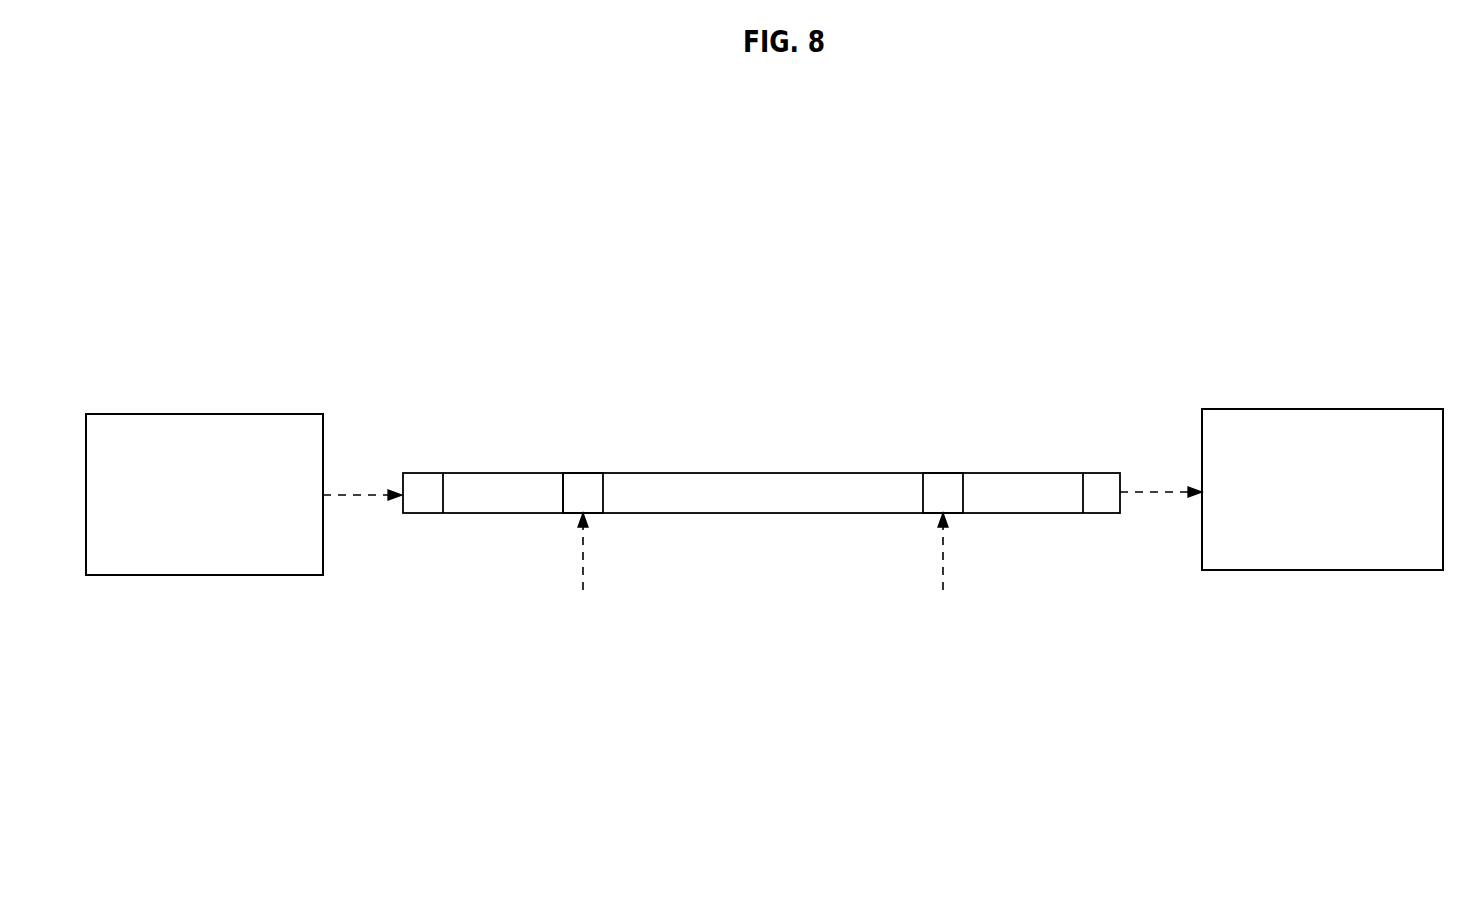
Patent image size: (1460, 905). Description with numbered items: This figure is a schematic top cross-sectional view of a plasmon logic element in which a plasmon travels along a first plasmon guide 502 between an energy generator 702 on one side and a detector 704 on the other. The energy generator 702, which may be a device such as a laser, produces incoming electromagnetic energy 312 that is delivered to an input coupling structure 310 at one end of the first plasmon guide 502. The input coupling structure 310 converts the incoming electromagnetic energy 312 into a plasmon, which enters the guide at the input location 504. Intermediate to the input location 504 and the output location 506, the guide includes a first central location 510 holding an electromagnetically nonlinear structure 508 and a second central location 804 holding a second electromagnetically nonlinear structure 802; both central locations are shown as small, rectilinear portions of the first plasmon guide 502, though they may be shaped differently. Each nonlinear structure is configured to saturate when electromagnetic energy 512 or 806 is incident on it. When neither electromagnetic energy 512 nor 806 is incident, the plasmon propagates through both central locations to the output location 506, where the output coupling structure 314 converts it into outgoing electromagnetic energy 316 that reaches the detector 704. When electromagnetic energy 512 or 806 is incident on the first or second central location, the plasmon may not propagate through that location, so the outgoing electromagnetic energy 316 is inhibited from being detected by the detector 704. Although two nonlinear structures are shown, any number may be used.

The energy generator 702 is at (204, 494).
The detector 704 is at (1322, 489).
The incoming electromagnetic energy 312 is at (362, 478).
The outgoing electromagnetic energy 316 is at (1161, 475).
The first plasmon guide 502 is at (768, 541).
The input coupling structure 310 is at (423, 513).
The input location 504 is at (513, 513).
The electromagnetically nonlinear structure 508 is at (665, 459).
The first central location 510 is at (594, 462).
The electromagnetic energy 512 is at (583, 571).
The second electromagnetically nonlinear structure 802 is at (1028, 459).
The second central location 804 is at (954, 462).
The electromagnetic energy 806 is at (943, 570).
The output location 506 is at (1025, 513).
The output coupling structure 314 is at (1105, 513).